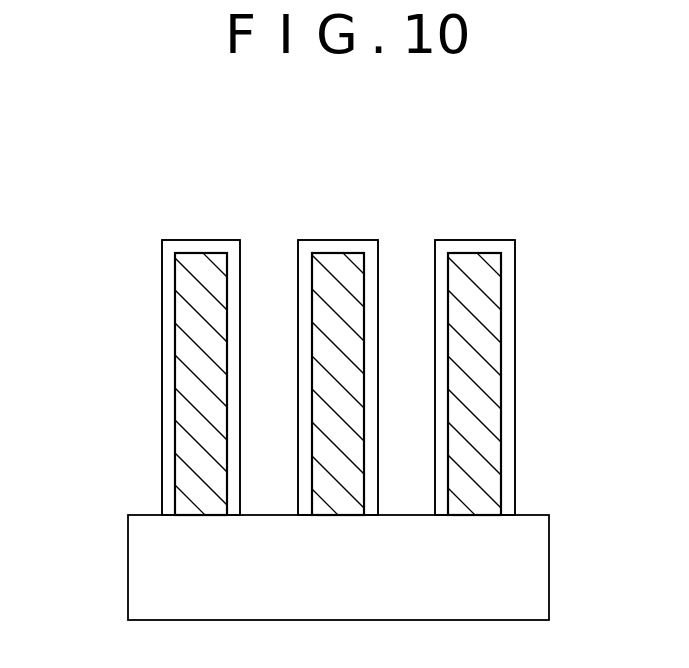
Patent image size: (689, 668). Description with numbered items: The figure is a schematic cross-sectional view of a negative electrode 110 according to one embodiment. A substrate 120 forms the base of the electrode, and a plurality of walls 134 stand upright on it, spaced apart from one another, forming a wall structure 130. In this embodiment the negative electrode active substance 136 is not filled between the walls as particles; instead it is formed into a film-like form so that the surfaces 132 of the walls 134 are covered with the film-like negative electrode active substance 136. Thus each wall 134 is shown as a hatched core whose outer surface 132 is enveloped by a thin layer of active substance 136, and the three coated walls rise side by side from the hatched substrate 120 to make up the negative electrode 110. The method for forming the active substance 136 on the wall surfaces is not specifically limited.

The structure 110 is at (560, 212).
The substrate 120 is at (517, 570).
The pillar structure 130 is at (540, 352).
The surface of core 132 is at (488, 250).
The walls 134 is at (185, 262).
The negative electrode active substance 136 is at (363, 245).